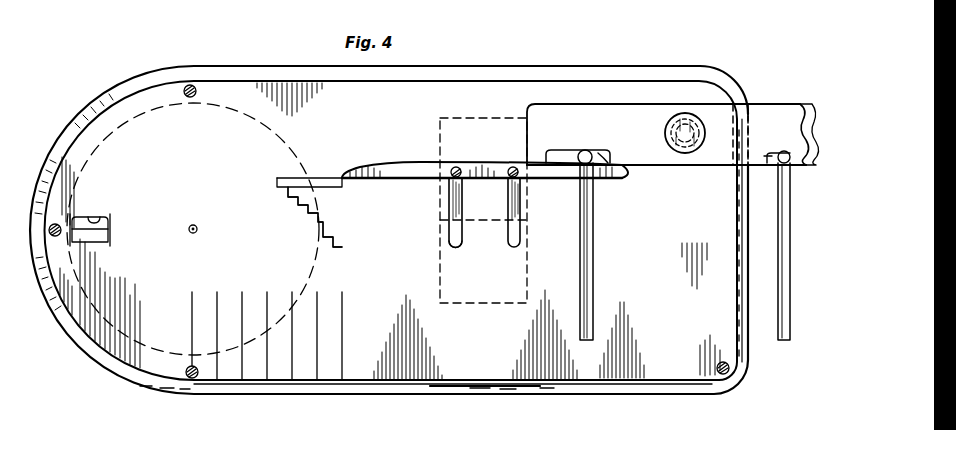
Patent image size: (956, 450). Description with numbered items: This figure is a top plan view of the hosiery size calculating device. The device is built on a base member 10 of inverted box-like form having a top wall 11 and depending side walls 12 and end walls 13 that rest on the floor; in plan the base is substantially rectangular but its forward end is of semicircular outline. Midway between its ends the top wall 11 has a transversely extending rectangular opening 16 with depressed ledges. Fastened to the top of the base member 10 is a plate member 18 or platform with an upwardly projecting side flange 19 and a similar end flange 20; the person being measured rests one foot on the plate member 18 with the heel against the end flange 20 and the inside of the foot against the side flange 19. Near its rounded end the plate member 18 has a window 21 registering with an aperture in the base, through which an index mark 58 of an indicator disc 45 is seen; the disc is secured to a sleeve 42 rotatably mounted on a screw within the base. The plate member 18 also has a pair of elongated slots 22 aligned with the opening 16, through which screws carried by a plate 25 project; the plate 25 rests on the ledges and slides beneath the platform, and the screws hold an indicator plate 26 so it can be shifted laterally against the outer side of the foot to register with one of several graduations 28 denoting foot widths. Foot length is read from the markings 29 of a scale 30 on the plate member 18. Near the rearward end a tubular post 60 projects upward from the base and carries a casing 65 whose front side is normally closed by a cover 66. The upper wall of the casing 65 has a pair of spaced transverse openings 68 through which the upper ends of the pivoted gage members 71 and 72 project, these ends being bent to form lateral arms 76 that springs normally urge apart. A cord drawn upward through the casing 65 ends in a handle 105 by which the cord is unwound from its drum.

The base member 10 is at (455, 386).
The top wall 11 is at (310, 70).
The side walls 12 is at (480, 70).
The end walls 13 is at (77, 344).
The rectangular opening 16 is at (528, 258).
The plate member 18 is at (380, 192).
The side flange 19 is at (418, 383).
The end flange 20 is at (737, 317).
The window 21 is at (98, 218).
The elongated slots 22 is at (450, 203).
The plate 25 is at (446, 240).
The indicator plate 26 is at (407, 167).
The graduations 28 is at (312, 214).
The markings 29 is at (318, 338).
The scale 30 is at (185, 327).
The sleeve 42 is at (199, 224).
The indicator disc 45 is at (282, 138).
The index mark 58 is at (110, 230).
The tubular post 60 is at (664, 130).
The casing 65 is at (560, 104).
The cover 66 is at (668, 168).
The transverse openings 68 is at (604, 158).
The gage member 71 is at (585, 150).
The gage member 72 is at (783, 151).
The lateral arms 76 is at (593, 282).
The handle 105 is at (686, 128).